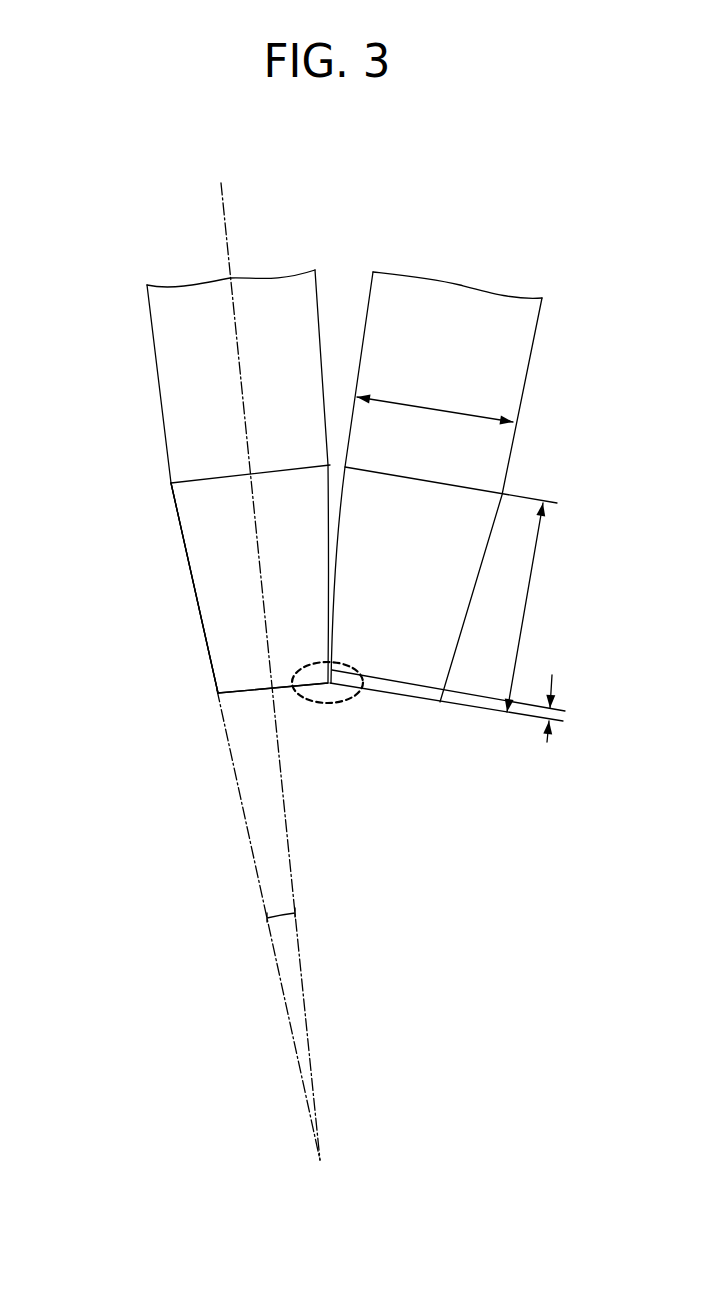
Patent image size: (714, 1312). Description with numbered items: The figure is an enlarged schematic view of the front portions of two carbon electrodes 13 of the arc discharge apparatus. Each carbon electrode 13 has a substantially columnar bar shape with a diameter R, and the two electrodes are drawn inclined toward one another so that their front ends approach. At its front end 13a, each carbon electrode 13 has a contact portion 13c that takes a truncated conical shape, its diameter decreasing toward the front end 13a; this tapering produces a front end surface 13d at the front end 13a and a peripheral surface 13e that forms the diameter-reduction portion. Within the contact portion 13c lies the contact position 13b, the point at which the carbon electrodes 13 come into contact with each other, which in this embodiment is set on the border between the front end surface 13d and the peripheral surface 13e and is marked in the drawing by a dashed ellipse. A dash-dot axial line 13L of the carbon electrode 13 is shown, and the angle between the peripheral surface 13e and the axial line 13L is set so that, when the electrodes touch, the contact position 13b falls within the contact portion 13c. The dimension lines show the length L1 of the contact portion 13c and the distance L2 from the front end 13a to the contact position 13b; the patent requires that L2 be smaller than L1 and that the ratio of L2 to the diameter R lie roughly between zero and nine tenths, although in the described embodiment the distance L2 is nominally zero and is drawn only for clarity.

The carbon electrode 13 is at (155, 343).
The front end 13a is at (407, 732).
The contact position 13b is at (295, 666).
The contact portion 13c is at (175, 519).
The front end surface 13d is at (247, 693).
The peripheral surface 13e is at (192, 578).
The axial line 13L is at (292, 862).
The diameter of the carbon electrode R is at (435, 399).
The length of the contact portion L1 is at (537, 607).
The distance from front end to contact position L2 is at (565, 716).